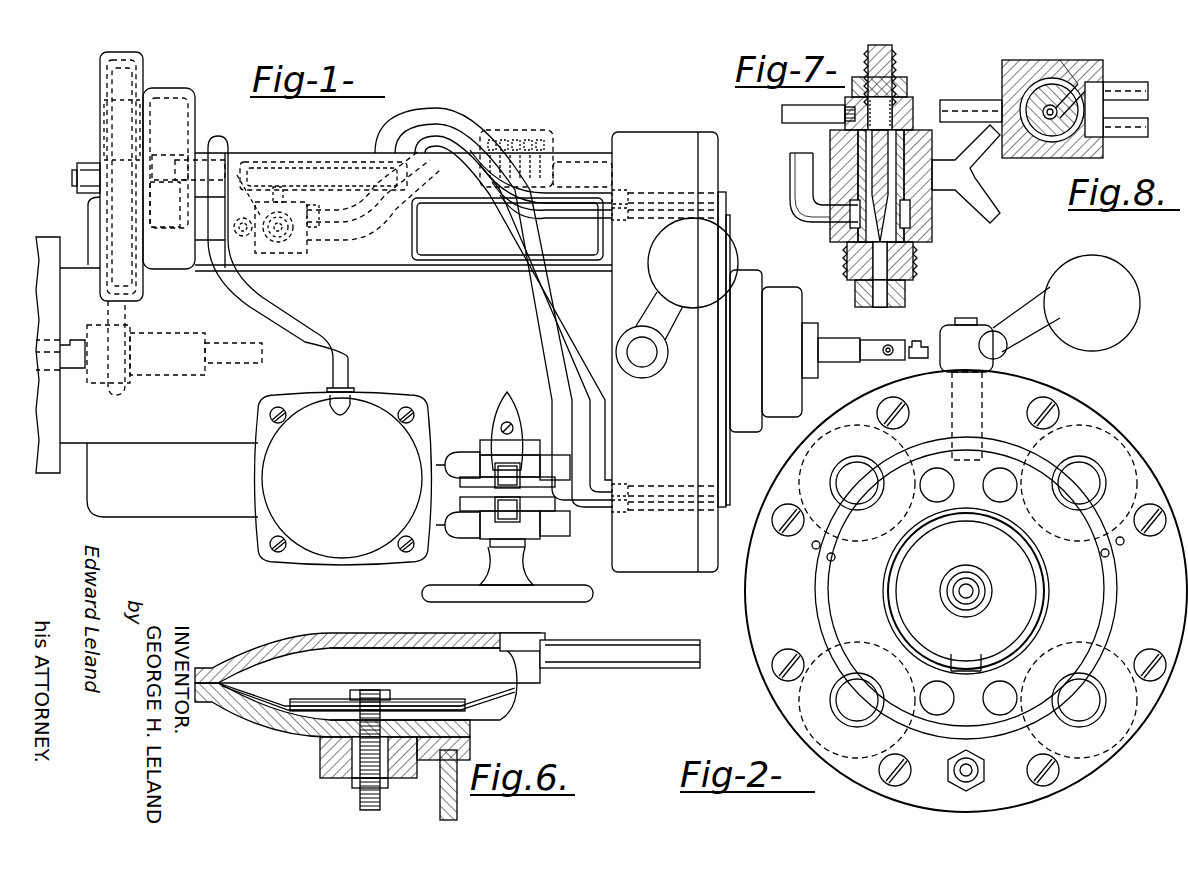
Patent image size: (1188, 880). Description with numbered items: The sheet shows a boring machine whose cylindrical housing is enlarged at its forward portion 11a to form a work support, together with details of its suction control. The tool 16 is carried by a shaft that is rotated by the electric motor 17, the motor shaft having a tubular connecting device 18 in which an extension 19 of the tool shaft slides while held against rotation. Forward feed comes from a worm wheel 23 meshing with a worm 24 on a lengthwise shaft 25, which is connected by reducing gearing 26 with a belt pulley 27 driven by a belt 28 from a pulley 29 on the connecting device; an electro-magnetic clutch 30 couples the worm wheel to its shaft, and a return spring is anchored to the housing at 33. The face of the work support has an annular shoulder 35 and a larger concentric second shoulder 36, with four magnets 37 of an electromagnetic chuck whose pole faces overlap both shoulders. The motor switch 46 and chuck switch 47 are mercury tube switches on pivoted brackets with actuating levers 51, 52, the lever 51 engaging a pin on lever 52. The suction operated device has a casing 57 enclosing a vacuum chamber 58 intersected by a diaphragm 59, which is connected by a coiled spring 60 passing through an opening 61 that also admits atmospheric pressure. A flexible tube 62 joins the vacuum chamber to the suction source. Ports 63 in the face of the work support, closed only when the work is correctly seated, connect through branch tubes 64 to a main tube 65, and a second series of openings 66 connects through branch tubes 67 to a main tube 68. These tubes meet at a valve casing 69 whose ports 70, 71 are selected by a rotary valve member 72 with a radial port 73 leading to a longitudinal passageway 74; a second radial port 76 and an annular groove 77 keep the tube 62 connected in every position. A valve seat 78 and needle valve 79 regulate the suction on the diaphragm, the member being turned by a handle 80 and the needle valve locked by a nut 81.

In FIG. 1, the enlarged forward portion of the housing 11a is at (668, 562).
In FIG. 2, the enlarged forward portion of the housing 11a is at (760, 630).
In FIG. 1, the tool 16 is at (875, 342).
In FIG. 2, the tool 16 is at (966, 598).
In FIG. 1, the electric motor 17 is at (45, 240).
In FIG. 1, the tubular connecting device 18 is at (192, 375).
In FIG. 1, the extension of the shaft 19 is at (242, 364).
In FIG. 1, the worm wheel 23 is at (570, 165).
In FIG. 1, the worm 24 is at (522, 140).
In FIG. 1, the shaft 25 is at (342, 170).
In FIG. 1, the reducing gearing 26 is at (172, 120).
In FIG. 1, the belt pulley 27 is at (100, 108).
In FIG. 1, the belt 28 is at (128, 306).
In FIG. 1, the pulley 29 is at (128, 382).
In FIG. 1, the electro-magnetic clutch 30 is at (507, 229).
In FIG. 2, the spring connection to housing 33 is at (953, 772).
In FIG. 1, the annular shoulder 35 is at (724, 464).
In FIG. 2, the annular shoulder 35 is at (1105, 608).
In FIG. 1, the second shoulder 36 is at (730, 498).
In FIG. 2, the second shoulder 36 is at (1120, 610).
In FIG. 2, the magnets of the electro-magnetic chuck 37 is at (850, 483).
In FIG. 1, the motor switch 46 is at (458, 530).
In FIG. 1, the chuck switch 47 is at (458, 452).
In FIG. 1, the actuating lever 51 is at (508, 509).
In FIG. 1, the actuating lever 52 is at (508, 475).
In FIG. 1, the casing 57 is at (343, 478).
In FIG. 6, the casing 57 is at (325, 640).
In FIG. 6, the vacuum chamber 58 is at (435, 684).
In FIG. 6, the diaphragm 59 is at (470, 700).
In FIG. 6, the coiled spring 60 is at (382, 790).
In FIG. 6, the opening 61 is at (355, 784).
In FIG. 1, the flexible tube 62 is at (342, 345).
In FIG. 7, the flexible tube 62 is at (790, 168).
In FIG. 8, the flexible tube 62 is at (955, 110).
In FIG. 6, the flexible tube 62 is at (660, 642).
In FIG. 1, the openings or ports 63 is at (650, 220).
In FIG. 2, the openings or ports 63 is at (834, 560).
In FIG. 1, the branch tubes 64 is at (585, 214).
In FIG. 1, the main tube 65 is at (315, 250).
In FIG. 8, the main tube 65 is at (1115, 135).
In FIG. 1, the openings 66 is at (662, 192).
In FIG. 2, the openings 66 is at (812, 547).
In FIG. 1, the branch tubes 67 is at (562, 196).
In FIG. 1, the main tube 68 is at (305, 200).
In FIG. 7, the main tube 68 is at (980, 200).
In FIG. 8, the main tube 68 is at (1128, 82).
In FIG. 1, the valve casing 69 is at (278, 252).
In FIG. 7, the valve casing 69 is at (925, 242).
In FIG. 8, the valve casing 69 is at (1002, 70).
In FIG. 8, the port 70 is at (1075, 135).
In FIG. 8, the port 71 is at (1082, 88).
In FIG. 7, the rotary valve member 72 is at (913, 105).
In FIG. 8, the rotary valve member 72 is at (1035, 80).
In FIG. 8, the radial port 73 is at (1068, 88).
In FIG. 7, the passageway 74 is at (847, 270).
In FIG. 7, the second radial port 76 is at (860, 224).
In FIG. 7, the annular groove 77 is at (858, 214).
In FIG. 7, the valve seat 78 is at (912, 212).
In FIG. 7, the needle valve 79 is at (830, 140).
In FIG. 7, the handle 80 is at (782, 113).
In FIG. 7, the nut 81 is at (895, 72).